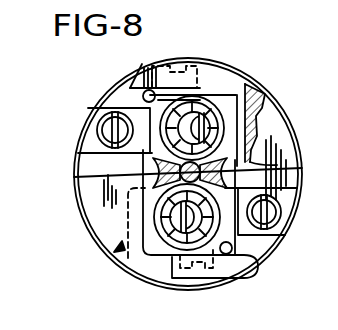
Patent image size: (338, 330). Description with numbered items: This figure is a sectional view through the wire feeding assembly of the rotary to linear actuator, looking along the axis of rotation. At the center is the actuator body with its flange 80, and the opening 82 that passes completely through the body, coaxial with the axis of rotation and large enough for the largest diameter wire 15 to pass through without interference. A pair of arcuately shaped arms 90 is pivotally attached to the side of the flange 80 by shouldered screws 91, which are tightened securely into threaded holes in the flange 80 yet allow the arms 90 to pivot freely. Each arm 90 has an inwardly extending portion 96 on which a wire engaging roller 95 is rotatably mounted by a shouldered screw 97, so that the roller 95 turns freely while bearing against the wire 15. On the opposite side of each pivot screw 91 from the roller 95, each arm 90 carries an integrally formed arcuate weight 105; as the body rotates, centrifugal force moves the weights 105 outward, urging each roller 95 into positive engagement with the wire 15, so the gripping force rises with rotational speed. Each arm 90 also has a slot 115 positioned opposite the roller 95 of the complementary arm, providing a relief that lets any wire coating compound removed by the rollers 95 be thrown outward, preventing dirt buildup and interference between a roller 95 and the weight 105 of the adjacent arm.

The wire 15 is at (80, 176).
The flange 80 is at (84, 209).
The opening 82 is at (277, 164).
The arm 90 is at (278, 122).
The screw 91 is at (108, 127).
The wire engaging roller 95 is at (196, 107).
The inwardly extending portion 96 is at (148, 128).
The screw 97 is at (220, 126).
The weight 105 is at (140, 80).
The slot 115 is at (215, 78).